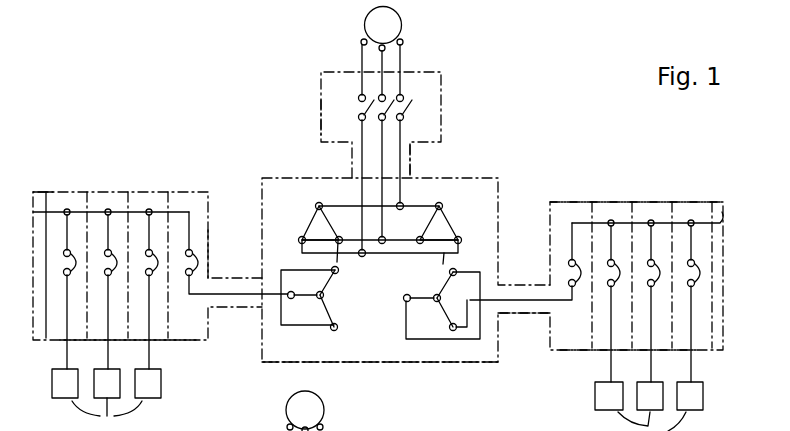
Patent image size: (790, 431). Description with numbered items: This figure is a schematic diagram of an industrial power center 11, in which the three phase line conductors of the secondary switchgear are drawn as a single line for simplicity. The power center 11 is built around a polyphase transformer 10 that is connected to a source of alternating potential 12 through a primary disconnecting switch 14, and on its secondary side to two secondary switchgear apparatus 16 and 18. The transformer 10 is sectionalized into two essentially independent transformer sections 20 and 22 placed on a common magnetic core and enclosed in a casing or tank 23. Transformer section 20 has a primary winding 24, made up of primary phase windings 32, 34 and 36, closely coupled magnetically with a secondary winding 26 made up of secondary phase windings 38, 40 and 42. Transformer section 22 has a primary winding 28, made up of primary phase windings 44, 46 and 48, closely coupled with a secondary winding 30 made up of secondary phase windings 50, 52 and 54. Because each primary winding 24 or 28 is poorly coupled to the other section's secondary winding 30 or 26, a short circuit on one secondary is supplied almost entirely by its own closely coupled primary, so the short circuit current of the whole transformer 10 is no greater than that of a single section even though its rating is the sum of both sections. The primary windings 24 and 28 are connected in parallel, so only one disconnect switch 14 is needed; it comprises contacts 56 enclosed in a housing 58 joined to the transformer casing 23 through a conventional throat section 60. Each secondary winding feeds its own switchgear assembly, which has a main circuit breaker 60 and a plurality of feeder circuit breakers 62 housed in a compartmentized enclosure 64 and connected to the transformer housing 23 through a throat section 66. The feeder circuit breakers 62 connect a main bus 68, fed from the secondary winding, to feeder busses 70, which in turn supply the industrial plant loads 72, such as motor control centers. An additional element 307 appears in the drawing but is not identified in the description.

The polyphase transformer 10 is at (393, 388).
The power center 11 is at (573, 122).
The source of alternating potential 12 is at (400, 17).
The primary disconnecting switch 14 is at (467, 120).
The secondary switchgear apparatus 16 is at (153, 174).
The secondary switchgear apparatus 18 is at (630, 186).
The transformer section 20 is at (319, 311).
The transformer section 22 is at (429, 315).
The transformer casing 23 is at (469, 179).
The primary winding 24 is at (318, 215).
The secondary winding 26 is at (326, 299).
The primary winding 28 is at (437, 215).
The secondary winding 30 is at (425, 300).
The primary phase winding 32 is at (312, 223).
The primary phase winding 34 is at (326, 223).
The primary phase winding 36 is at (348, 260).
The secondary phase winding 38 is at (328, 283).
The secondary phase winding 40 is at (315, 311).
The secondary phase winding 42 is at (295, 283).
The primary phase winding 44 is at (432, 223).
The primary phase winding 46 is at (446, 223).
The primary phase winding 48 is at (430, 266).
The secondary phase winding 50 is at (446, 285).
The secondary phase winding 52 is at (433, 312).
The secondary phase winding 54 is at (414, 285).
The contacts 56 is at (358, 112).
The housing 58 is at (320, 124).
The main circuit breaker 60 is at (410, 162).
The feeder circuit breakers 62 is at (77, 273).
The compartmentized enclosure 64 is at (172, 343).
The throat section 66 is at (238, 312).
The main bus 68 is at (60, 210).
The feeder busses 70 is at (147, 352).
The industrial plant loads 72 is at (107, 414).
The auxiliary motor 307 is at (323, 410).